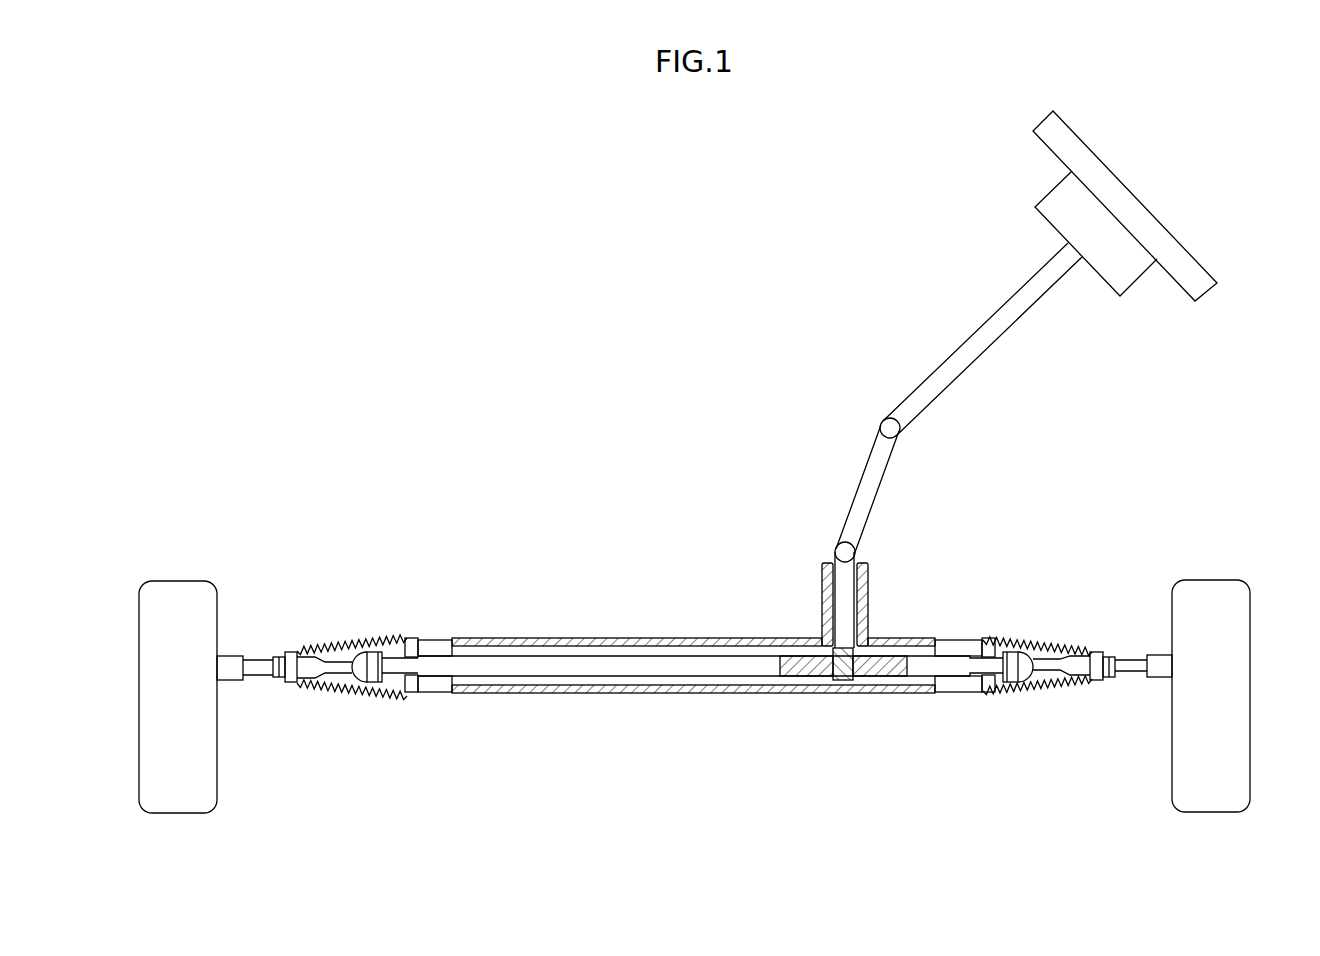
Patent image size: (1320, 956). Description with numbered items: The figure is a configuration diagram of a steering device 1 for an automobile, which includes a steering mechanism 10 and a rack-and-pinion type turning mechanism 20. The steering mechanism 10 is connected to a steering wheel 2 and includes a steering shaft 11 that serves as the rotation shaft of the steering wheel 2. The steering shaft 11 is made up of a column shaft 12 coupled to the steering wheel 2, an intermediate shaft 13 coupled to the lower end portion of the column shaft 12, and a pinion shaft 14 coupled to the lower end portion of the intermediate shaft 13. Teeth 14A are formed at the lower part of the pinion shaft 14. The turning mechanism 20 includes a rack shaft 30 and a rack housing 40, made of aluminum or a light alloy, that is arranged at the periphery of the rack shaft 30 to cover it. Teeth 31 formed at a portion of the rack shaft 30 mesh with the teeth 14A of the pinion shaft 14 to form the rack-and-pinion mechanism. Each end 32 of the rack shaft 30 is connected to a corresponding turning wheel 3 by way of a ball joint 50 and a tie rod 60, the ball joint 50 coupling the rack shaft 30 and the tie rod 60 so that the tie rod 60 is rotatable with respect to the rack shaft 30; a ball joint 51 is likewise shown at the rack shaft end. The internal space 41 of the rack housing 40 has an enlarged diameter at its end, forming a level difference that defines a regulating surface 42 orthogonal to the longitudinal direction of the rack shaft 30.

The steering device 1 is at (1187, 130).
The steering wheel 2 is at (1208, 289).
The turning wheels 3 is at (177, 588).
The steering mechanism 10 is at (895, 296).
The steering shaft 11 is at (853, 366).
The column shaft 12 is at (920, 389).
The intermediate shaft 13 is at (870, 473).
The pinion shaft 14 is at (842, 587).
The teeth 14A is at (842, 650).
The turning mechanism 20 is at (607, 584).
The rack shaft 30 is at (930, 673).
The teeth 31 is at (892, 673).
The end 32 is at (395, 660).
The rack housing 40 is at (633, 697).
The internal space 41 is at (712, 650).
The regulating surface 42 is at (438, 639).
The ball joint 50 is at (368, 683).
The ball joint 51 is at (369, 656).
The tie rod 60 is at (300, 680).